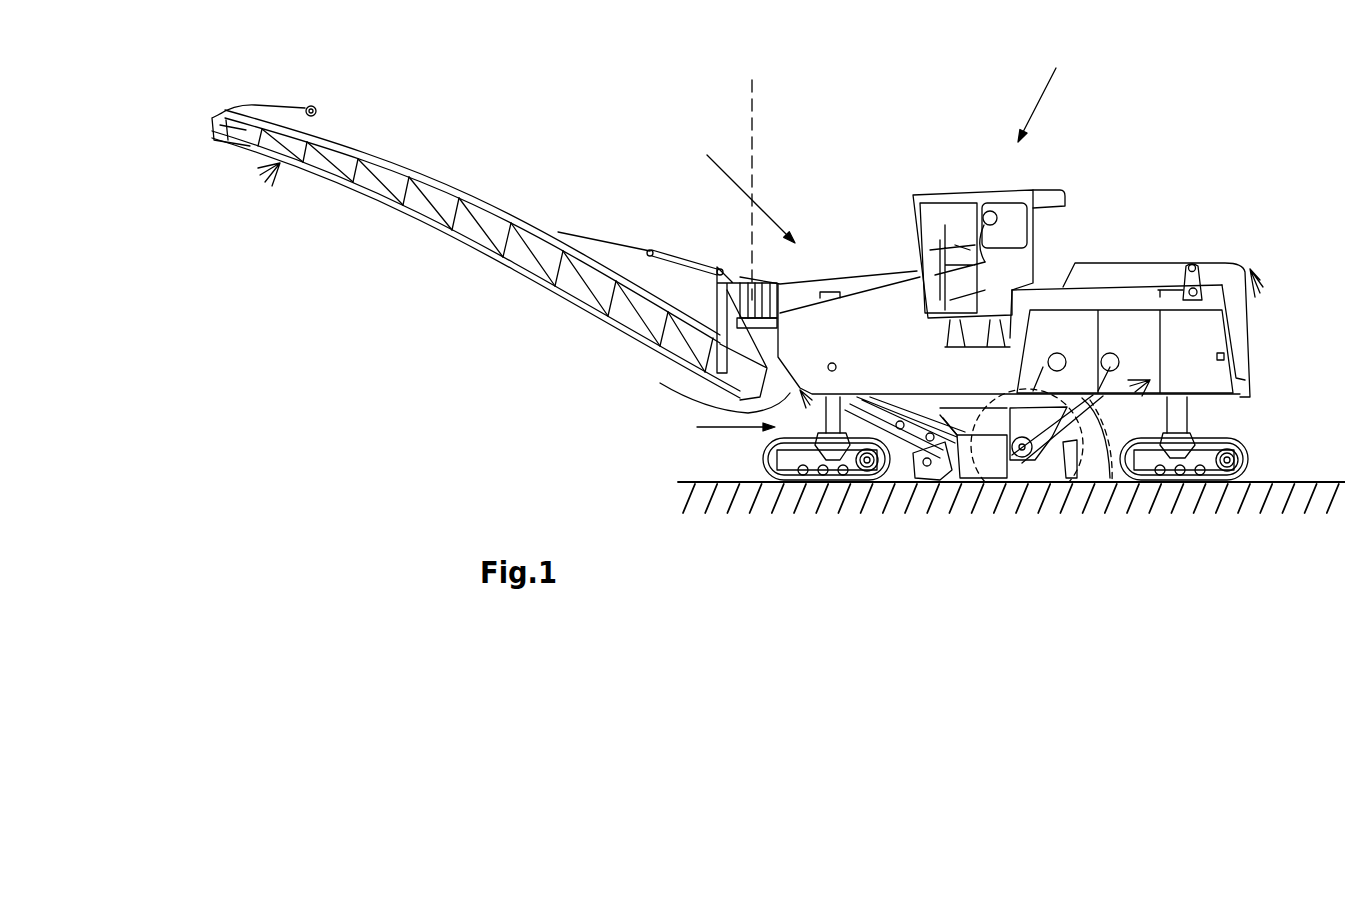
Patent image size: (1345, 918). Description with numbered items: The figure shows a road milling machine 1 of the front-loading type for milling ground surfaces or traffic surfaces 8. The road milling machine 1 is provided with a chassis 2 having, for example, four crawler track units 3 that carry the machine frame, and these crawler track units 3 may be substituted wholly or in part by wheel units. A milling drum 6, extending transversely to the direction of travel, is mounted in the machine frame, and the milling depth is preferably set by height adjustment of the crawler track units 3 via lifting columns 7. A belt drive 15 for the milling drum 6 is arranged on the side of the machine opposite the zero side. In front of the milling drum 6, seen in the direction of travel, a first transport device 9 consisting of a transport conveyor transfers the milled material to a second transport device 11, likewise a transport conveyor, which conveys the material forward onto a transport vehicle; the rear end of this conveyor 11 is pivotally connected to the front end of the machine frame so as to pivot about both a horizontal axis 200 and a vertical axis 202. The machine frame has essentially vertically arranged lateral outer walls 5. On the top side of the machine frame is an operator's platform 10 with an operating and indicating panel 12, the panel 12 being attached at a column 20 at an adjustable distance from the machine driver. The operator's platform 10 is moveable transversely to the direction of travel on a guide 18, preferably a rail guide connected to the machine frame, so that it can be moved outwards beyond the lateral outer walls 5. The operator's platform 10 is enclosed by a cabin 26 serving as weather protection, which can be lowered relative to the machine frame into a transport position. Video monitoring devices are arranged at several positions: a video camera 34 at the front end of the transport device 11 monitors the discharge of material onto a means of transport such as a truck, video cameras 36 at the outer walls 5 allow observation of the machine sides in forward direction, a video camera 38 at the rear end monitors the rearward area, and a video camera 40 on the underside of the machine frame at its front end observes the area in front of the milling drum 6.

The road milling machine 1 is at (743, 184).
The chassis 2 is at (726, 427).
The crawler track units 3 is at (890, 470).
The lateral outer walls 5 is at (884, 367).
The milling drum 6 is at (970, 482).
The lifting columns 7 is at (847, 395).
The ground surfaces or traffic surfaces 8 is at (693, 483).
The first transport device 9 is at (910, 400).
The operator's platform 10 is at (1052, 88).
The second transport device 11 is at (553, 283).
The operating and indicating panel 12 is at (924, 242).
The belt drive 15 is at (1112, 482).
The guide 18 is at (1010, 338).
The column 20 is at (928, 278).
The cabin 26 is at (1027, 260).
The video camera 34 is at (283, 167).
The video cameras 36 is at (1150, 380).
The video camera 38 is at (1250, 268).
The video camera 40 is at (745, 412).
The horizontal axis 200 is at (748, 408).
The vertical axis 202 is at (753, 112).